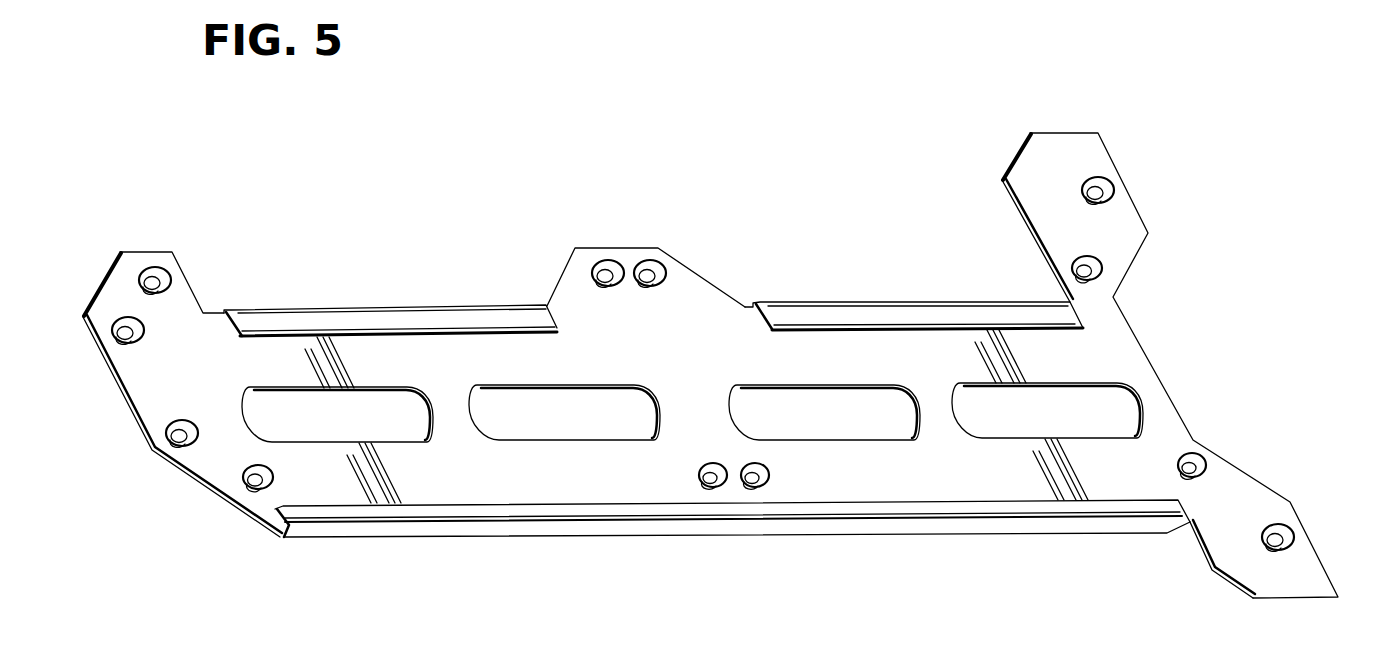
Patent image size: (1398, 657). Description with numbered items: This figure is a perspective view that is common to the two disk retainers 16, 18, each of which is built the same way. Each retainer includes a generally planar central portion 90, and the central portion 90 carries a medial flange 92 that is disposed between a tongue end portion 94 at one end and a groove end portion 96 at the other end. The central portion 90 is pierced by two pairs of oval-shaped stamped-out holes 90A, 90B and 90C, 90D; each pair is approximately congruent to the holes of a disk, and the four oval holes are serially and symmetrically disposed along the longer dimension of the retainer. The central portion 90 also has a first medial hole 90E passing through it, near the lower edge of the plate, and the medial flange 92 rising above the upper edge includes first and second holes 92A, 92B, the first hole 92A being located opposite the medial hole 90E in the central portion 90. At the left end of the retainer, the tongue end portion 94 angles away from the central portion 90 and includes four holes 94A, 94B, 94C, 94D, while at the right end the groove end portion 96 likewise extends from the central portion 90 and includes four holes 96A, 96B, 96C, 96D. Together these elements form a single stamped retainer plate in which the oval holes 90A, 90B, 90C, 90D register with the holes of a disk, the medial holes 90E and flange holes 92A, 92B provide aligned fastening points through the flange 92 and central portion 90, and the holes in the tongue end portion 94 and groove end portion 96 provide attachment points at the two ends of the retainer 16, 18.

The disk retainer 16 is at (703, 365).
The disk retainer 18 is at (703, 365).
The central portion 90 is at (707, 388).
The oval-shaped stamped-out hole 90A is at (313, 390).
The oval-shaped stamped-out hole 90B is at (537, 390).
The oval-shaped stamped-out hole 90C is at (802, 390).
The oval-shaped stamped-out hole 90D is at (1033, 388).
The first medial hole 90E is at (700, 472).
The medial flange 92 is at (627, 248).
The first hole 92A is at (594, 266).
The second hole 92B is at (664, 262).
The tongue end portion 94 is at (153, 375).
The hole 94A is at (150, 266).
The hole 94B is at (118, 318).
The hole 94C is at (168, 432).
The hole 94D is at (255, 490).
The groove end portion 96 is at (1191, 365).
The hole 96A is at (1110, 181).
The hole 96B is at (1102, 272).
The hole 96C is at (1205, 466).
The hole 96D is at (1292, 551).